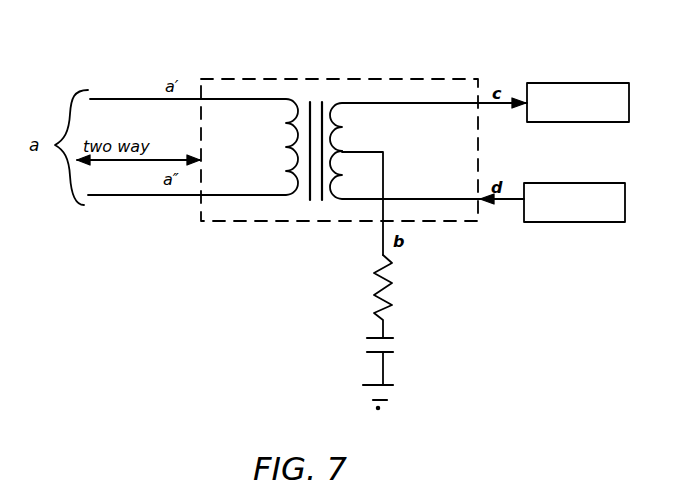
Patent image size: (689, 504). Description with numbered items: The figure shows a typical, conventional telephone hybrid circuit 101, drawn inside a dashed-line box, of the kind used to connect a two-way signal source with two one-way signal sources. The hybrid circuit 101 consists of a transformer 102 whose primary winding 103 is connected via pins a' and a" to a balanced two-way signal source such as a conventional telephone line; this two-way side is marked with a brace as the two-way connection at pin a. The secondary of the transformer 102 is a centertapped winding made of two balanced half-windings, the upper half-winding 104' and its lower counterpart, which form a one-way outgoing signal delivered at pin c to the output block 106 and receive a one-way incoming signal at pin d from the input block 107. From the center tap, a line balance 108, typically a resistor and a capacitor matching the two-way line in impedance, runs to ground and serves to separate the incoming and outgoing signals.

The hybrid circuit 101 is at (311, 79).
The transformer 102 is at (305, 205).
The primary winding 103 is at (285, 166).
The half-winding 104' is at (428, 124).
The output (OUT) terminal 106 is at (579, 83).
The input (IN) terminal 107 is at (576, 222).
The line balance 108 is at (398, 329).